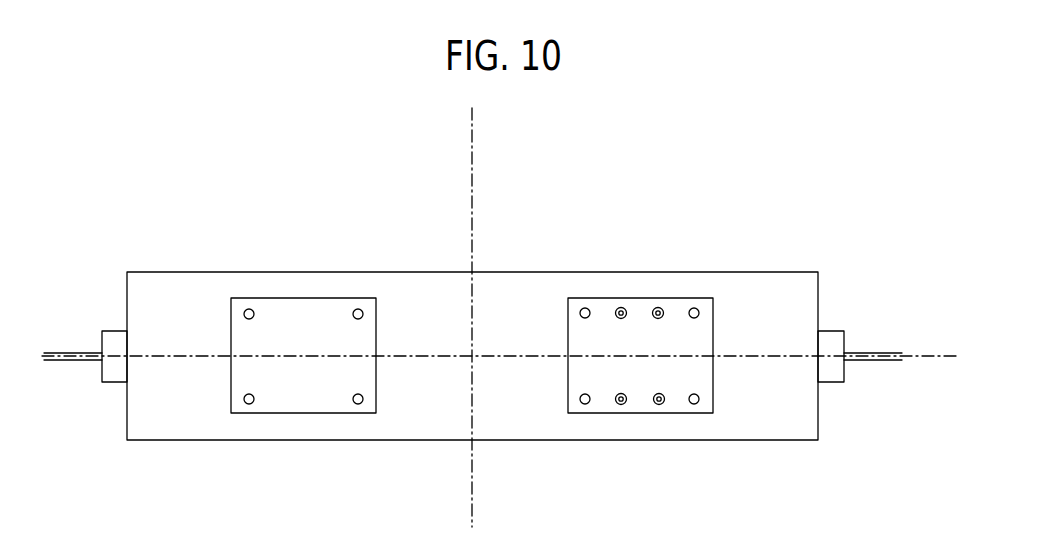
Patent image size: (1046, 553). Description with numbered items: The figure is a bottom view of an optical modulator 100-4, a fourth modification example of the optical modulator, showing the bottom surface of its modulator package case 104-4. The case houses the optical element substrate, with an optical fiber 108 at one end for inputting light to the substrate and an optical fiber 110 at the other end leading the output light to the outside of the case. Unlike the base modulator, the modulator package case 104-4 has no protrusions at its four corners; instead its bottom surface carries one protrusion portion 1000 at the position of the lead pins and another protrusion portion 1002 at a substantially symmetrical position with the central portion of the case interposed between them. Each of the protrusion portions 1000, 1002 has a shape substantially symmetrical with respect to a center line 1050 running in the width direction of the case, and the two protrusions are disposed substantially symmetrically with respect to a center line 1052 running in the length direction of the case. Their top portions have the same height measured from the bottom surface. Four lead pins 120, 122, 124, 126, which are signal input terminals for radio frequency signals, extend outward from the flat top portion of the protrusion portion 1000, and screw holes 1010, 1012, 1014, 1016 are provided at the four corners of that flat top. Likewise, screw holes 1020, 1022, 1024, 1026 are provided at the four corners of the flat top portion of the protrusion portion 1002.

The optical modulator 100-4 is at (210, 175).
The modulator package case 104-4 is at (472, 314).
The center line in the length direction 1052 is at (422, 317).
The center line in the width direction 1050 is at (501, 312).
The optical fiber 110 is at (73, 410).
The optical fiber 108 is at (878, 409).
The protrusion portion 1002 is at (345, 356).
The protrusion portion 1000 is at (601, 354).
The screw hole 1024 is at (217, 265).
The screw hole 1026 is at (330, 265).
The screw hole 1020 is at (204, 445).
The screw hole 1022 is at (391, 447).
The screw hole 1014 is at (538, 270).
The screw hole 1016 is at (728, 265).
The screw hole 1010 is at (540, 444).
The screw hole 1012 is at (730, 447).
The lead pin 124 is at (601, 250).
The lead pin 126 is at (673, 250).
The lead pin 120 is at (595, 461).
The lead pin 122 is at (675, 461).